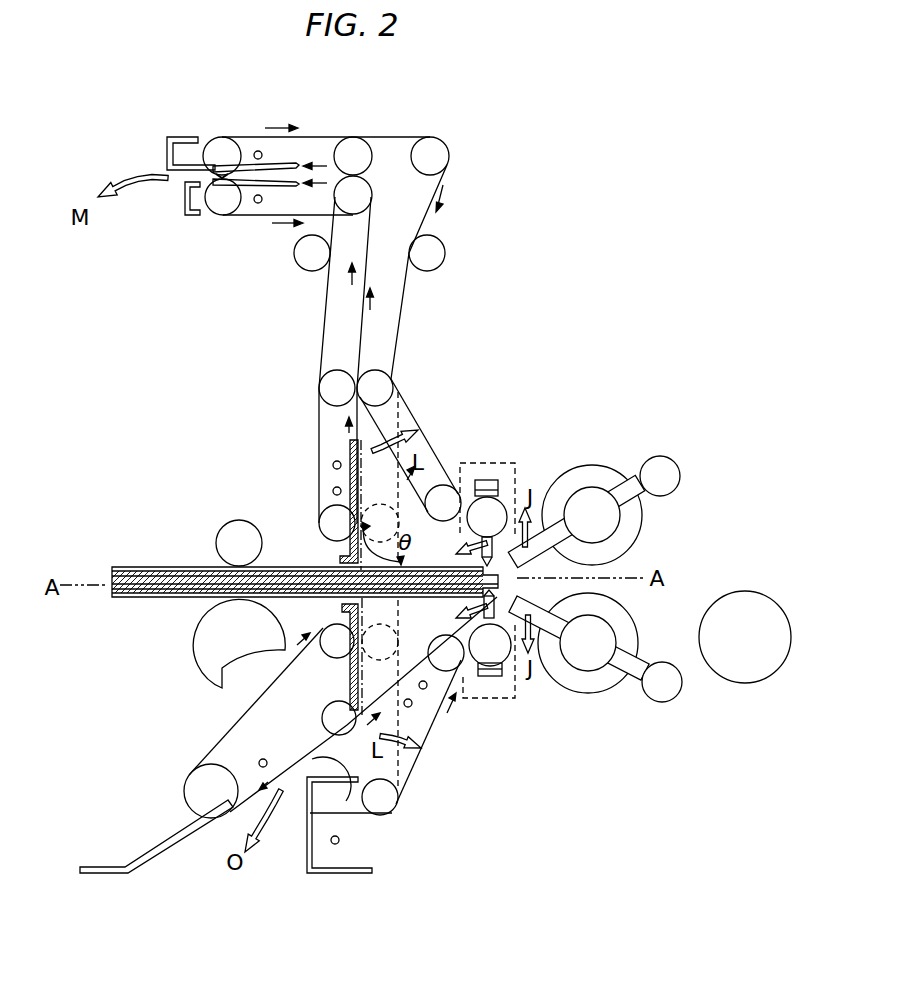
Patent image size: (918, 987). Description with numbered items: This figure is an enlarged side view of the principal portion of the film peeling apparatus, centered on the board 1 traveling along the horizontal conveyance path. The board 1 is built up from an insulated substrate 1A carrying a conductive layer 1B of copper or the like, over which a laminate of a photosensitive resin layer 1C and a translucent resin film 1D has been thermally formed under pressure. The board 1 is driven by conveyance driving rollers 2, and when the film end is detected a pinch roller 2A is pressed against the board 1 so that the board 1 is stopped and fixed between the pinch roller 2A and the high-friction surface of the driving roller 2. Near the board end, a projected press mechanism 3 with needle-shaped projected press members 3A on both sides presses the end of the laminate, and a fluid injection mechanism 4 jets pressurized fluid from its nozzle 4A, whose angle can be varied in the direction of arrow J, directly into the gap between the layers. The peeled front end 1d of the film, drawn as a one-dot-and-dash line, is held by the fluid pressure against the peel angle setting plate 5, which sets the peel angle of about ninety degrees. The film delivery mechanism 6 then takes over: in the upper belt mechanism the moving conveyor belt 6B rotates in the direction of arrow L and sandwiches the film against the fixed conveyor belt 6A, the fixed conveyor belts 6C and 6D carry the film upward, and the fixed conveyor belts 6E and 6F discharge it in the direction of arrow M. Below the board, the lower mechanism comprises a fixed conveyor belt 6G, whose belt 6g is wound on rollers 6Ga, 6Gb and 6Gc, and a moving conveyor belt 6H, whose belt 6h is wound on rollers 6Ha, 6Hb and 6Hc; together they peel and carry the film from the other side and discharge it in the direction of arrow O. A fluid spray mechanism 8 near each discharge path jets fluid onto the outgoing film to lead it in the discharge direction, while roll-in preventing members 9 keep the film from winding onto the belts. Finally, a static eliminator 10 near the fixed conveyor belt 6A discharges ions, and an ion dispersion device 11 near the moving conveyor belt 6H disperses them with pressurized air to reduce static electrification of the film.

The board 1 is at (279, 568).
The insulated substrate 1A is at (185, 582).
The conductive layer 1B is at (215, 573).
The photosensitive resin layer 1C is at (150, 573).
The translucent resin film 1D is at (125, 568).
The front end of the translucent resin film 1d is at (350, 447).
The conveyance driving roller 2 is at (593, 466).
The pinch roller 2A is at (238, 520).
The projected press mechanism 3 is at (480, 463).
The projected press member 3A is at (497, 540).
The fluid injection mechanism 4 is at (641, 466).
The nozzle 4A is at (548, 527).
The peel angle setting plate 5 is at (350, 480).
The film delivery mechanism 6 is at (405, 405).
The fixed conveyor belt 6A is at (320, 401).
The moving conveyor belt 6B is at (389, 422).
The fixed conveyor belt 6C is at (325, 308).
The fixed conveyor belt 6D is at (405, 298).
The fixed conveyor belt 6E is at (230, 216).
The fixed conveyor belt 6F is at (340, 137).
The fixed conveyor belt 6G is at (222, 734).
The belt 6g is at (233, 723).
The roller 6Ga is at (335, 640).
The roller 6Gb is at (338, 725).
The roller 6Gc is at (186, 796).
The moving conveyor belt 6H is at (413, 770).
The belt 6h is at (427, 713).
The roller 6Ha is at (461, 670).
The roller 6Hb is at (386, 801).
The roller 6Hc is at (300, 806).
The fluid spray mechanism 8 is at (258, 151).
The roll-in preventing member 9 is at (185, 137).
The static eliminator 10 is at (333, 463).
The ion dispersion device 11 is at (333, 491).